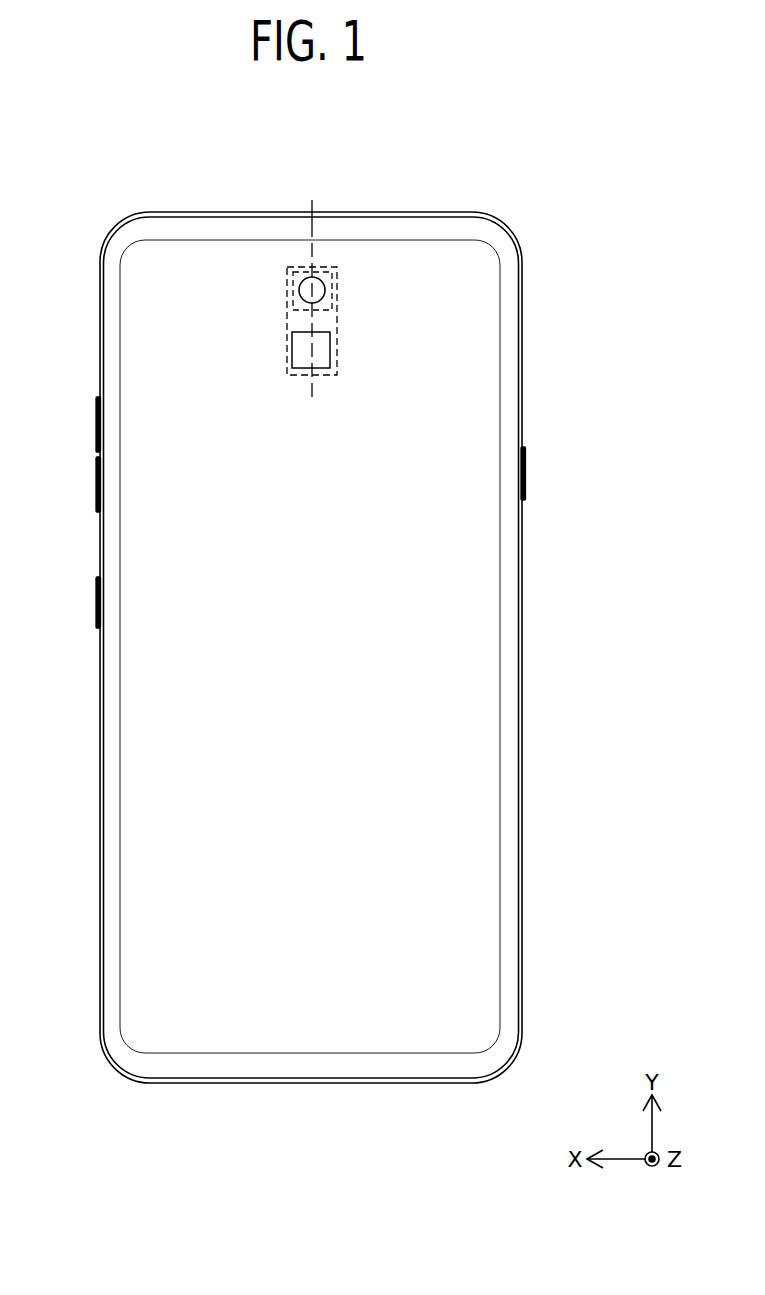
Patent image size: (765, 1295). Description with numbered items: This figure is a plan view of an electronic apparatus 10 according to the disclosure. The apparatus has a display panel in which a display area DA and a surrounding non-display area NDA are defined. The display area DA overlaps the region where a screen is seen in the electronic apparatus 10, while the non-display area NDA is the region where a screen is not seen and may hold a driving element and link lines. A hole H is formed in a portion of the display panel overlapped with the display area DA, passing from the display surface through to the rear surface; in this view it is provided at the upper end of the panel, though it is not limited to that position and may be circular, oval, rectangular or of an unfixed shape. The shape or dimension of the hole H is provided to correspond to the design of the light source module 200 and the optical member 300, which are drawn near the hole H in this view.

The electronic apparatus 10 is at (91, 173).
The light source module 200 is at (330, 350).
The optical member 300 is at (440, 250).
The hole H is at (320, 278).
The display area DA is at (432, 603).
The non-display area NDA is at (508, 745).